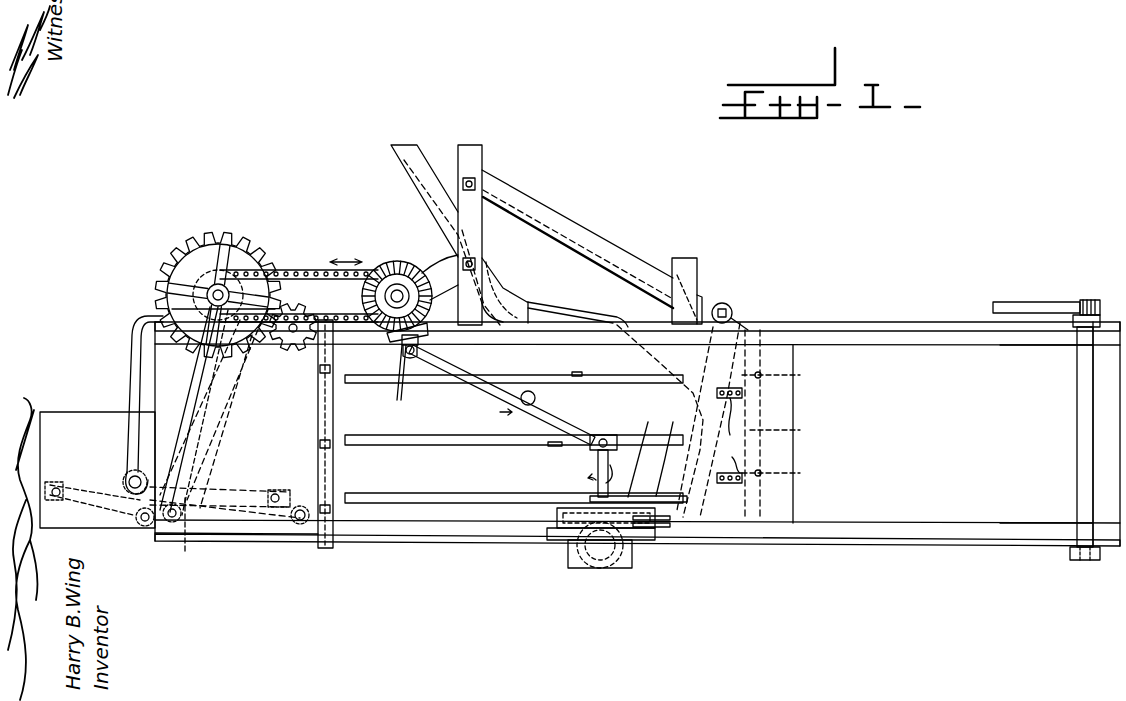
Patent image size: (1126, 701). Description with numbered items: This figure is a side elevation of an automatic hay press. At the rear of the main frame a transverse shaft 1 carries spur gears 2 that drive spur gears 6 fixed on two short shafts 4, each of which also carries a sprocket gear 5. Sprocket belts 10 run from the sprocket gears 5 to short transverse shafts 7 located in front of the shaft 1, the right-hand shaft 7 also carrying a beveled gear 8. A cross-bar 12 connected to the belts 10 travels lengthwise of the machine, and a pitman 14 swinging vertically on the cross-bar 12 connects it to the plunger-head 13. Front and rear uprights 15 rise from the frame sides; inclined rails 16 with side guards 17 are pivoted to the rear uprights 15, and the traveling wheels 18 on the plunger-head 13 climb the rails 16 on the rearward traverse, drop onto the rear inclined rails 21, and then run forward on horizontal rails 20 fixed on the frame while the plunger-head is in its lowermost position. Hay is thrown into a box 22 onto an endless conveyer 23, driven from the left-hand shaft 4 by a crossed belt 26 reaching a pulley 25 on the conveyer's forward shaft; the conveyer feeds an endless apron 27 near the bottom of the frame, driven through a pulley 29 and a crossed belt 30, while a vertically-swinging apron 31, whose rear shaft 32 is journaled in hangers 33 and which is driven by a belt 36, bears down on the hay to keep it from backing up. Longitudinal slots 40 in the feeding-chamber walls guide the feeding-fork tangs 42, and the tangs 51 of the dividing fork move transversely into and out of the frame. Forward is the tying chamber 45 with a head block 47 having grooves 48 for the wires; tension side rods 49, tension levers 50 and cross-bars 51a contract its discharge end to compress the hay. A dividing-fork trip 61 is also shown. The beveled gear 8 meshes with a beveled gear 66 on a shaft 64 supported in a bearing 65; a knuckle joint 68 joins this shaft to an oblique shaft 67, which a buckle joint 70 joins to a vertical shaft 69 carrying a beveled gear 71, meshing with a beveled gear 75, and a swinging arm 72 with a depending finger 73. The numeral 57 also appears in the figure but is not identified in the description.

The transverse shaft 1 is at (292, 334).
The spur gears 2 is at (280, 345).
The short shafts 4 is at (208, 290).
The sprocket gear 5 is at (232, 288).
The spur gear 6 is at (176, 335).
The short transverse shafts 7 is at (390, 290).
The beveled gear 8 is at (440, 276).
The sprocket belts 10 is at (308, 270).
The cross-bar 12 is at (398, 285).
The plunger-head 13 is at (712, 372).
The pitman 14 is at (563, 312).
The uprights 15 is at (482, 160).
The inclined rails 16 is at (573, 237).
The side guards 17 is at (622, 257).
The traveling wheels 18 is at (730, 306).
The horizontal rails 20 is at (833, 323).
The rear inclined rails 21 is at (400, 164).
The box 22 is at (68, 412).
The endless conveyer 23 is at (88, 492).
The pulley 25 is at (158, 522).
The crossed belt 26 is at (180, 436).
The endless apron 27 is at (242, 543).
The pulley 29 is at (191, 535).
The crossed belt 30 is at (200, 420).
The vertically-swinging apron 31 is at (228, 488).
The rear shaft 32 is at (137, 466).
The hangers 33 is at (134, 371).
The belt 36 is at (142, 397).
The longitudinal slots 40 is at (475, 384).
The feeding-fork tangs 42 is at (598, 368).
The tying chamber 45 is at (948, 346).
The head block 47 is at (789, 434).
The grooves 48 is at (785, 430).
The tension side rods 49 is at (1078, 436).
The tension levers 50 is at (1005, 302).
The dividing-fork tangs 51 is at (318, 490).
The cross-bars 51a is at (1083, 325).
The lugs 57 is at (318, 390).
The dividing-fork trip 61 is at (410, 356).
The shaft 64 is at (382, 390).
The bearing 65 is at (400, 360).
The beveled gear 66 is at (396, 343).
The oblique shaft 67 is at (492, 421).
The knuckle joint 68 is at (428, 352).
The vertical shaft 69 is at (600, 436).
The buckle joint 70 is at (604, 436).
The beveled gear 71 is at (560, 495).
The swinging arm 72 is at (644, 452).
The depending finger 73 is at (670, 451).
The beveled gear 75 is at (590, 570).